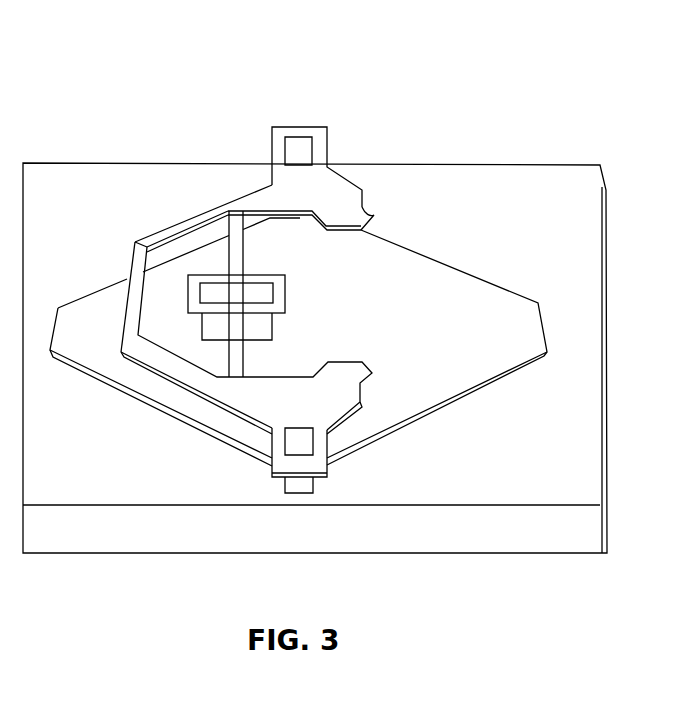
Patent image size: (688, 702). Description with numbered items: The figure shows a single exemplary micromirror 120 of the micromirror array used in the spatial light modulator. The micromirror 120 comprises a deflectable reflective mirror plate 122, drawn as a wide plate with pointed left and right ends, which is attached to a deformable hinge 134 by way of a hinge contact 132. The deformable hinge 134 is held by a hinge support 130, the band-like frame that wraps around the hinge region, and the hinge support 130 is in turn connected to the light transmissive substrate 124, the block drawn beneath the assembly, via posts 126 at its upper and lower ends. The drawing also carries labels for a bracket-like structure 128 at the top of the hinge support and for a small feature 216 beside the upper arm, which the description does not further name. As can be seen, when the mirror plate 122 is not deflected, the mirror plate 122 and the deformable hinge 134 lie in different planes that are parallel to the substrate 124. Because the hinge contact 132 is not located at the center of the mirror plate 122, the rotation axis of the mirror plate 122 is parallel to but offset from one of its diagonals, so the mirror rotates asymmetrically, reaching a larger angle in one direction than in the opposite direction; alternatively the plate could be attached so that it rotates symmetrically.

The micromirror 120 is at (192, 105).
The deflectable reflective mirror plate 122 is at (450, 292).
The light transmissive substrate 124 is at (455, 532).
The posts 126 is at (298, 150).
The bracket 128 is at (340, 143).
The hinge support 130 is at (128, 281).
The hinge contact 132 is at (287, 297).
The deformable hinge 134 is at (243, 350).
The tab 216 is at (375, 216).